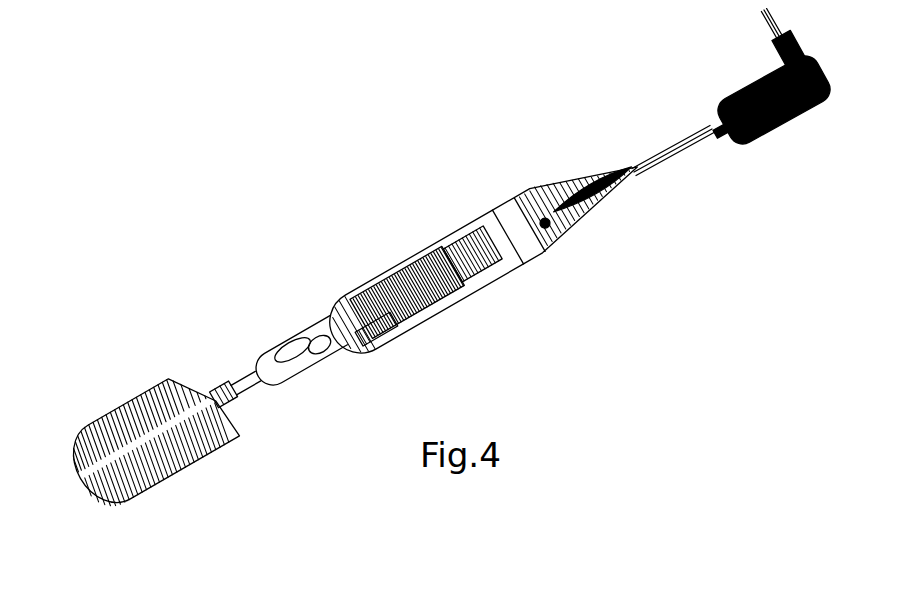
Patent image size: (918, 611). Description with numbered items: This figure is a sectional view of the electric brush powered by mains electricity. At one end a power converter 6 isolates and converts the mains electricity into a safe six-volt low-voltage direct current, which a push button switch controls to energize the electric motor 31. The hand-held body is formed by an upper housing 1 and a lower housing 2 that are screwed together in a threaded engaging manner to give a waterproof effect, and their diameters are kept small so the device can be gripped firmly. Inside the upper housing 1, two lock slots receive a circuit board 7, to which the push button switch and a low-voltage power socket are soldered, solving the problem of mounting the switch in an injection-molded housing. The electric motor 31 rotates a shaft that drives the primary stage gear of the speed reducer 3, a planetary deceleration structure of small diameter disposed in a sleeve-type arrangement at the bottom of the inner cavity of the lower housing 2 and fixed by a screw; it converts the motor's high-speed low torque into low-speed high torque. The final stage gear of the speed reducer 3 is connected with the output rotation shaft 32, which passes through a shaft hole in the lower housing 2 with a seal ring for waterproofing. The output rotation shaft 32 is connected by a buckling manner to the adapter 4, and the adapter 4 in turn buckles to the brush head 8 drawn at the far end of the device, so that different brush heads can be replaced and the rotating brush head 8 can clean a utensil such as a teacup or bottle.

The upper housing 1 is at (533, 248).
The lower housing 2 is at (474, 279).
The speed reducer 3 is at (392, 262).
The electric motor 31 is at (447, 247).
The output rotation shaft 32 is at (372, 315).
The adapter 4 is at (345, 298).
The power converter 6 is at (727, 92).
The circuit board 7 is at (535, 209).
The brush head 8 is at (190, 365).